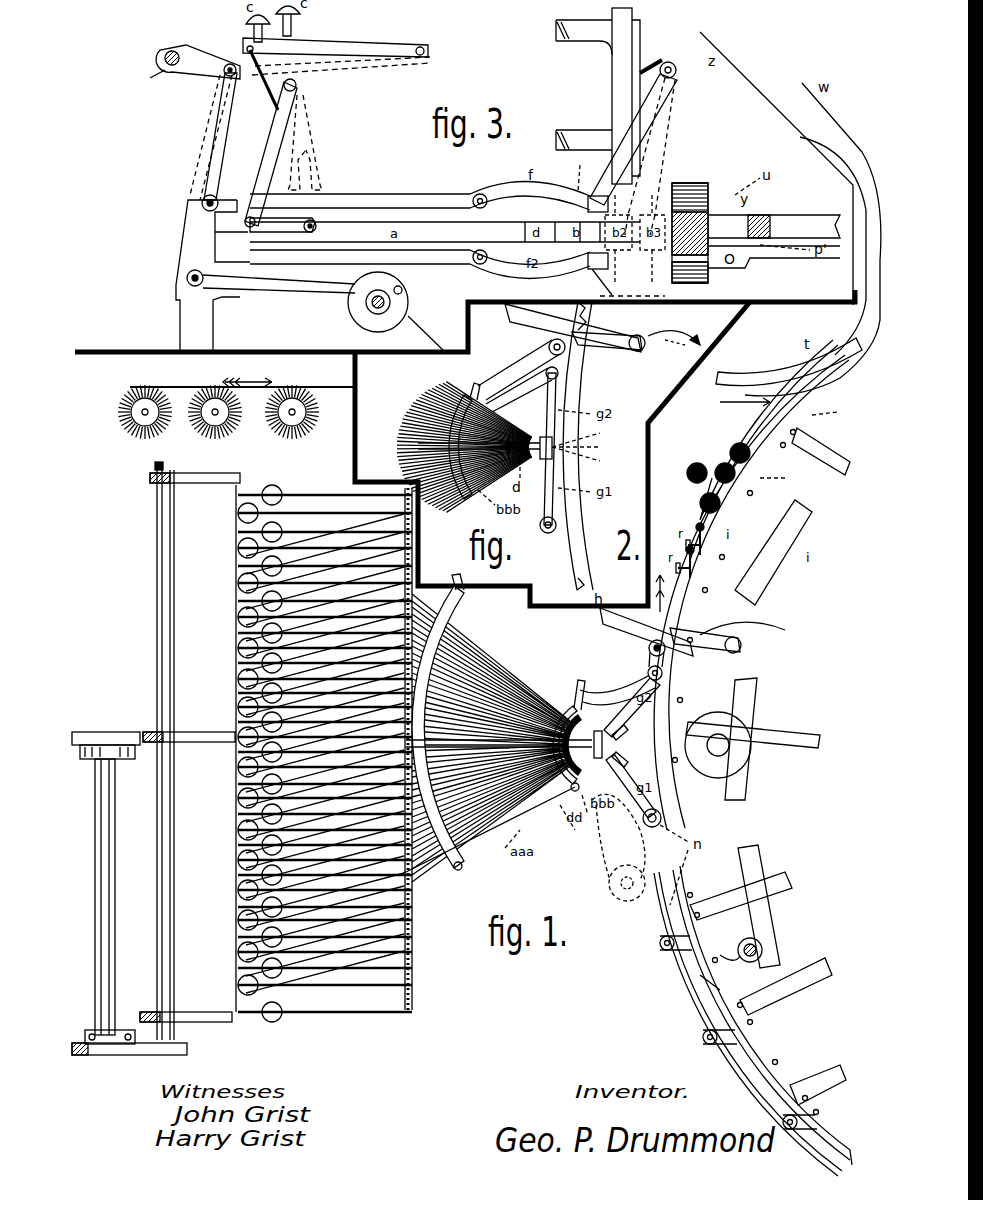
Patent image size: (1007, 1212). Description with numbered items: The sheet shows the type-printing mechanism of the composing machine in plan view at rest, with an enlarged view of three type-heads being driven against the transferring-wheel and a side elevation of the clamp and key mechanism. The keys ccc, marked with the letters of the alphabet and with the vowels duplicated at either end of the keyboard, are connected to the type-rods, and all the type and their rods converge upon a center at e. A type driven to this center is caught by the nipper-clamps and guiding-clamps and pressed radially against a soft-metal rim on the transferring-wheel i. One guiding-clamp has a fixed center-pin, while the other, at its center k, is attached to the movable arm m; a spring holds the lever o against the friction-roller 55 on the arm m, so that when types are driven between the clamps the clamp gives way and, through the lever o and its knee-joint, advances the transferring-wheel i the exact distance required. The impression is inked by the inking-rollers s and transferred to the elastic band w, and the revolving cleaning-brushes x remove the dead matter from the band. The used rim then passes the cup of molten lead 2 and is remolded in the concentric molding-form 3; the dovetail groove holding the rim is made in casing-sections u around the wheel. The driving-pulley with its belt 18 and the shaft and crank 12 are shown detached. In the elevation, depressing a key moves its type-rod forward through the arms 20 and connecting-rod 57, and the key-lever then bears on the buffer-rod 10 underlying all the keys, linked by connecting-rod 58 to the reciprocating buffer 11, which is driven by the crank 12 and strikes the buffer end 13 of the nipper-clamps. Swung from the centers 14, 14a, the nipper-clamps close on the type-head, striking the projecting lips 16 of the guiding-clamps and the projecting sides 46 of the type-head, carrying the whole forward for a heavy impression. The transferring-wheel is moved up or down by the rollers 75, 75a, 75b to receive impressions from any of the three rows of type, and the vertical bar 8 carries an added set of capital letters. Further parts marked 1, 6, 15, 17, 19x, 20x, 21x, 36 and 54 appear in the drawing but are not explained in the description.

In FIG. 3, the pivot pin of bar z 1 is at (432, 50).
In FIG. 1, the cup of molten lead 2 is at (753, 1010).
In FIG. 1, the concentric molding-form 3 is at (705, 988).
In FIG. 3, the bracket / dashed wheel 6 is at (598, 96).
In FIG. 1, the bracket / dashed wheel 6 is at (618, 847).
In FIG. 3, the vertical bar 8 is at (600, 37).
In FIG. 3, the buffer-lever rod 10 is at (198, 62).
In FIG. 1, the buffer-lever rod 10 is at (276, 740).
In FIG. 3, the rapidly-reciprocating buffer 11 is at (224, 197).
In FIG. 3, the rapidly-revolving crank 12 is at (387, 302).
In FIG. 1, the rapidly-revolving crank 12 is at (105, 722).
In FIG. 3, the buffer end of the nipper-clamps 13 is at (213, 276).
In FIG. 3, the swing arm of the nipper-clamps 14 is at (647, 147).
In FIG. 3, the swing center of the nipper-clamps 14a is at (647, 300).
In FIG. 2, the lever 15 is at (672, 326).
In FIG. 1, the lever 15 is at (745, 630).
In FIG. 1, the projecting lips of the guiding-clamps 16 is at (636, 764).
In FIG. 3, the frame rod 17 is at (148, 80).
In FIG. 1, the frame rod 17 is at (157, 605).
In FIG. 3, the belt 18 is at (431, 334).
In FIG. 1, the belt 18 is at (140, 1051).
In FIG. 1, the rail lug 19x is at (669, 953).
In FIG. 3, the arms 20 is at (286, 153).
In FIG. 1, the rail lug 20x is at (713, 1045).
In FIG. 1, the rail lug 21x is at (797, 1132).
In FIG. 3, the link 36 is at (283, 224).
In FIG. 3, the projecting sides of the type-head 46 is at (577, 170).
In FIG. 3, the bar 54 is at (279, 291).
In FIG. 1, the friction-roller 55 is at (648, 648).
In FIG. 3, the connecting-rod 57 is at (262, 78).
In FIG. 3, the connecting-rod 58 is at (218, 136).
In FIG. 3, the roller 75 is at (706, 231).
In FIG. 3, the roller 75a is at (695, 290).
In FIG. 3, the roller 75b is at (693, 177).
In FIG. 2, the movable arm m is at (478, 426).
In FIG. 1, the movable arm m is at (530, 728).
In FIG. 2, the center e is at (516, 446).
In FIG. 1, the center e is at (604, 745).
In FIG. 2, the center of the guiding-clamp k is at (560, 373).
In FIG. 1, the center of the guiding-clamp k is at (664, 673).
In FIG. 2, the lever o is at (573, 328).
In FIG. 1, the lever o is at (646, 632).
In FIG. 2, the transferring-wheel i is at (578, 446).
In FIG. 1, the casing-sections u is at (758, 584).
In FIG. 1, the inking-rollers s is at (718, 476).
In FIG. 1, the revolving cleaning-brushes x is at (218, 412).
In FIG. 1, the elastic band w is at (242, 376).
In FIG. 1, the keys ccc is at (270, 1024).